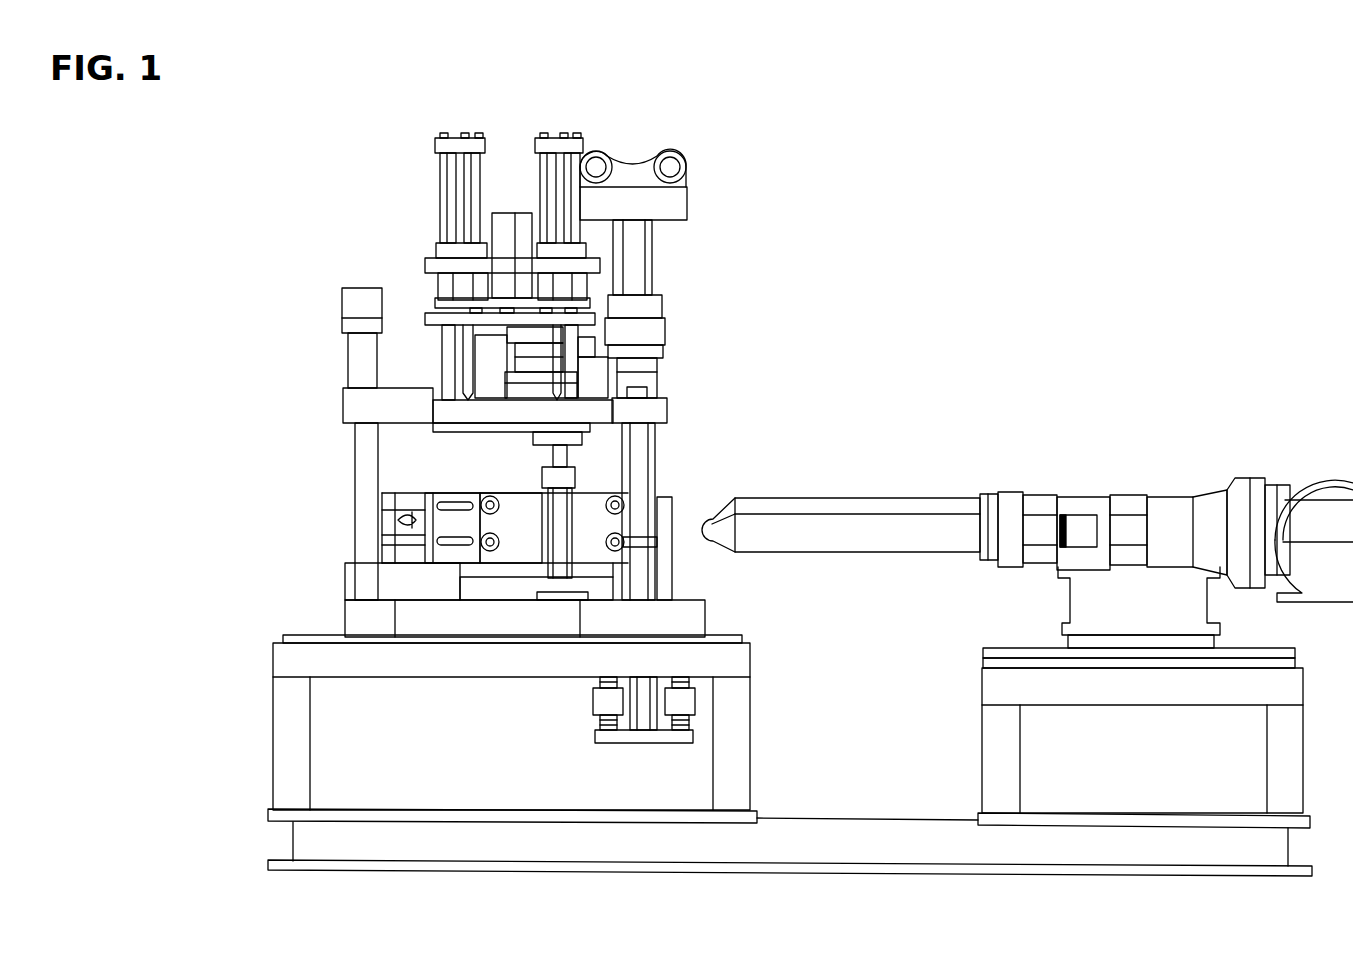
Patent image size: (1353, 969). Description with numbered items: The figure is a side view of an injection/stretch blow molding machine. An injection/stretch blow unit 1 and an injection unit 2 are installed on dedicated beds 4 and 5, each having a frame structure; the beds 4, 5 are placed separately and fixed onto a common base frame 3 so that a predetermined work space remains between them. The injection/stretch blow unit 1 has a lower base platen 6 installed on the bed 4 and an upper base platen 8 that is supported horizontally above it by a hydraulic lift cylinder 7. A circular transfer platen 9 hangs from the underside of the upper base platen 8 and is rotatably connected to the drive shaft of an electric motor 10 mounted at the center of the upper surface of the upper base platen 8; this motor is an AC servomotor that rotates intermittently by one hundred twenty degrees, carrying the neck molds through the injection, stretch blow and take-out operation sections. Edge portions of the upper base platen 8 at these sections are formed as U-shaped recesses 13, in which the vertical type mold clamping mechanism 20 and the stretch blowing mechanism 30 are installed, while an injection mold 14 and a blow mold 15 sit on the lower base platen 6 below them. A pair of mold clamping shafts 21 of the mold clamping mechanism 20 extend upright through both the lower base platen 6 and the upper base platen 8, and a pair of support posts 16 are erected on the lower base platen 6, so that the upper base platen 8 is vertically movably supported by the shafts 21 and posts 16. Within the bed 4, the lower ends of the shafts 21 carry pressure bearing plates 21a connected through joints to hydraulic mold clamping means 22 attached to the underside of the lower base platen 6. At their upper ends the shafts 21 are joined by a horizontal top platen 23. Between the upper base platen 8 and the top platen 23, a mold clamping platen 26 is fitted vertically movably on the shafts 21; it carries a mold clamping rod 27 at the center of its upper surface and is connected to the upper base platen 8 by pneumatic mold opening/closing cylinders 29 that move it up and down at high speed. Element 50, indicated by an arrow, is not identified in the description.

The injection/stretch blow unit 1 is at (398, 286).
The injection unit 2 is at (874, 498).
The common base frame 3 is at (838, 852).
The bed 4 is at (730, 730).
The bed 5 is at (994, 748).
The lower base platen 6 is at (430, 617).
The hydraulic lift cylinder 7 is at (558, 515).
The upper base platen 8 is at (360, 407).
The circular transfer platen 9 is at (465, 432).
The electric motor 10 is at (597, 358).
The U-shaped recess 13 is at (455, 413).
The injection mold 14 is at (664, 569).
The blow mold 15 is at (438, 522).
The support post 16 is at (363, 480).
The vertical type mold clamping mechanism 20 is at (690, 160).
The mold clamping shaft 21 is at (633, 251).
The pressure bearing plate 21a is at (610, 742).
The hydraulic mold clamping means 22 is at (590, 704).
The top platen 23 is at (668, 206).
The mold clamping platen 26 is at (648, 331).
The mold clamping rod 27 is at (660, 282).
The pneumatic mold opening/closing cylinder 29 is at (658, 463).
The stretch blowing mechanism 30 is at (426, 245).
The block 50 is at (408, 319).